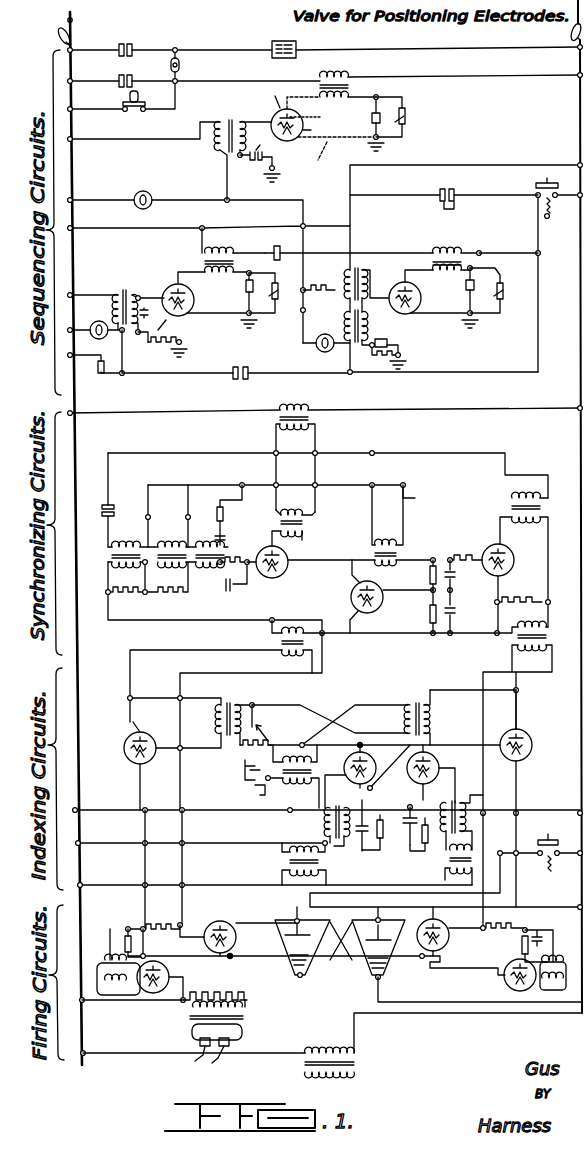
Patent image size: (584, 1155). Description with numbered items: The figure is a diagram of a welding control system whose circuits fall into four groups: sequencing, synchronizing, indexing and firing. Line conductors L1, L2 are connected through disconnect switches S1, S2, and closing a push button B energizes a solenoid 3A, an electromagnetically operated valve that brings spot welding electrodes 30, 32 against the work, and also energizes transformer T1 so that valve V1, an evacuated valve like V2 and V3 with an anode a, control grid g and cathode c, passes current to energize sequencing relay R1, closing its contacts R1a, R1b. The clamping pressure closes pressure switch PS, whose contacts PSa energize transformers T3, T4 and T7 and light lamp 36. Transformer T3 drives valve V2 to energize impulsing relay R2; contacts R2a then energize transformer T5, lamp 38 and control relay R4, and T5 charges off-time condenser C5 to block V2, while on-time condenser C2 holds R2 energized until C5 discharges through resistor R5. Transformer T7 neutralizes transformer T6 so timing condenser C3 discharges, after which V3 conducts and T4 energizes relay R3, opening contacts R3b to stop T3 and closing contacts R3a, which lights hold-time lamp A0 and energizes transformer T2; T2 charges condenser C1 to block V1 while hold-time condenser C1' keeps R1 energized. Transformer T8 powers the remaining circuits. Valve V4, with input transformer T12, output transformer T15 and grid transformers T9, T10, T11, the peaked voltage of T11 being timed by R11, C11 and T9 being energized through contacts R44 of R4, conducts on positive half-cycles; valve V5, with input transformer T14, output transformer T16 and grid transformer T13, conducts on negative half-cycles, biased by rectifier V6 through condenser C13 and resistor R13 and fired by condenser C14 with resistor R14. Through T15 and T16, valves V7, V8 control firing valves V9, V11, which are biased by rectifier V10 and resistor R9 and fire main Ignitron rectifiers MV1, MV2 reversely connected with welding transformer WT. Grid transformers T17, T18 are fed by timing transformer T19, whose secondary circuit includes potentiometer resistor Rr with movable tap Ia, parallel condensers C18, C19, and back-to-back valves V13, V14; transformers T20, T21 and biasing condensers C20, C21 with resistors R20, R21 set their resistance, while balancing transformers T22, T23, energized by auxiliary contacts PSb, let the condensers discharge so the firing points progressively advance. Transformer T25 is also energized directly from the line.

The line conductor L1 is at (78, 122).
The line conductor L2 is at (578, 112).
The disconnect switch S1 is at (76, 35).
The disconnect switch S2 is at (571, 30).
The relay contacts R1a is at (134, 45).
The relay contacts R1b is at (134, 76).
The push button B is at (140, 98).
The solenoid 3A is at (297, 44).
The transformer T2 is at (228, 120).
The condenser C1 is at (240, 160).
The hold-time lamp A0 is at (151, 195).
The electronic valve V1 is at (300, 118).
The anode a is at (273, 96).
The cathode c is at (310, 130).
The control grid g is at (310, 118).
The hold-time condenser C1' is at (360, 123).
The transformer T1 is at (359, 87).
The sequencing relay R1 is at (412, 118).
The pressure switch PS is at (552, 183).
The pressure switch contacts PSa is at (538, 194).
The relay contacts R3a is at (453, 204).
The transformer T3 is at (203, 262).
The relay contacts R3b is at (274, 248).
The electronic valve V2 is at (196, 295).
The on-time condenser C2 is at (245, 293).
The impulsing relay R2 is at (279, 283).
The transformer T5 is at (128, 285).
The indicating lamp 38 is at (99, 321).
The off-time condenser C5 is at (185, 339).
The resistor R5 is at (156, 353).
The control relay R4 is at (100, 380).
The relay contacts R2a is at (246, 366).
The indicating lamp 36 is at (317, 350).
The transformer T6 is at (360, 272).
The transformer T7 is at (359, 342).
The transformer T4 is at (432, 258).
The electronic valve V3 is at (421, 296).
The timing condenser C3 is at (392, 344).
The relay R3 is at (503, 284).
The transformer T8 is at (313, 414).
The relay contacts R44 is at (113, 503).
The grid transformer T9 is at (128, 546).
The grid transformer T10 is at (167, 526).
The grid transformer T11 is at (207, 526).
The phase shift resistor R11 is at (219, 510).
The phase shift condenser C11 is at (226, 530).
The input transformer T12 is at (278, 525).
The valve V4 is at (288, 557).
The grid transformer T13 is at (400, 552).
The input transformer T14 is at (510, 509).
The valve V5 is at (506, 552).
The full wave rectifier V6 is at (391, 596).
The resistor R13 is at (420, 574).
The discharge resistor R14 is at (427, 615).
The condenser C13 is at (455, 578).
The condenser C14 is at (463, 611).
The output transformer T15 is at (318, 645).
The output transformer T16 is at (512, 642).
The valve V7 is at (152, 741).
The grid transformer T17 is at (232, 706).
The movable tap Ia is at (263, 736).
The potentiometer resistor Rr is at (240, 748).
The condenser C19 is at (244, 770).
The condenser C18 is at (252, 790).
The timing transformer T19 is at (281, 786).
The grid transformer T18 is at (417, 699).
The valve V8 is at (533, 739).
The valve V13 is at (355, 748).
The valve V14 is at (438, 763).
The transformer T20 is at (325, 819).
The transformer T21 is at (461, 819).
The biasing condenser C21 is at (403, 817).
The biasing condenser C20 is at (366, 856).
The resistor R20 is at (379, 848).
The resistor R21 is at (426, 849).
The balancing transformer T22 is at (297, 861).
The balancing transformer T23 is at (478, 854).
The auxiliary pressure switch contacts PSb is at (551, 838).
The resistor R9 is at (172, 920).
The firing valve V9 is at (224, 920).
The rectifier V10 is at (170, 971).
The main gaseous discharge rectifier MV1 is at (280, 918).
The main gaseous discharge rectifier MV2 is at (467, 960).
The firing valve V11 is at (447, 929).
The welding transformer WT is at (246, 1018).
The welding electrode 30 is at (187, 1059).
The welding electrode 32 is at (226, 1059).
The transformer T25 is at (356, 1065).